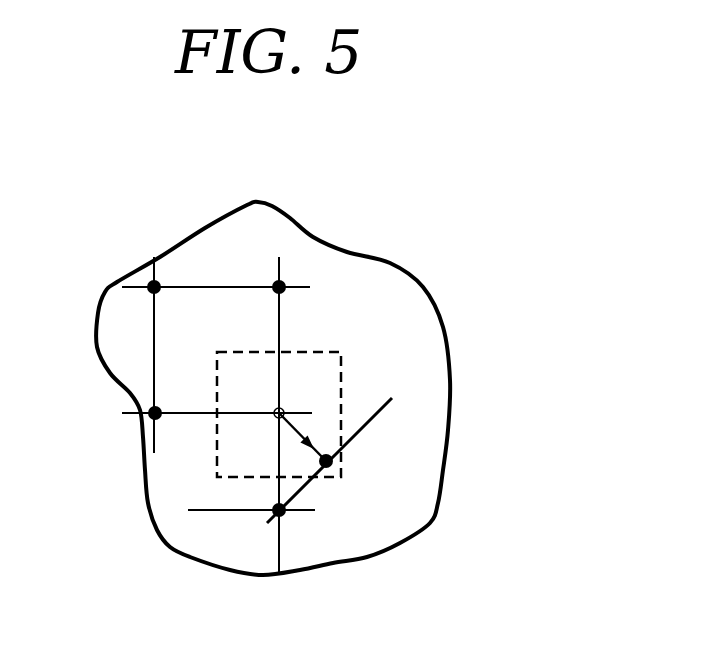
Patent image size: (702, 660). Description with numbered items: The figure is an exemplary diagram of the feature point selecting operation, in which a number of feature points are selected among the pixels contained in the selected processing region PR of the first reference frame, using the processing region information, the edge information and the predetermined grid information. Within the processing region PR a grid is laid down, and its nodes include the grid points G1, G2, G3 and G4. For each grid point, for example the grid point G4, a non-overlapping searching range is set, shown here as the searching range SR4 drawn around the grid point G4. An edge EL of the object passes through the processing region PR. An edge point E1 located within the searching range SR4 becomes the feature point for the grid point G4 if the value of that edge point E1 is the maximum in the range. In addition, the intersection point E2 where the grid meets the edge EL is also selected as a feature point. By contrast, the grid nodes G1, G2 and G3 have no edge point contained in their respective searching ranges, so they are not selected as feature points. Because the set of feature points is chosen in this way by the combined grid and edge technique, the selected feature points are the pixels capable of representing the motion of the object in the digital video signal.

The processing region PR is at (187, 237).
The grid node G1 is at (150, 280).
The grid node G2 is at (283, 282).
The grid node G3 is at (150, 420).
The grid point G4 is at (287, 410).
The searching range SR4 is at (300, 350).
The edge EL is at (375, 417).
The edge point E1 is at (333, 470).
The intersection point E2 is at (285, 518).